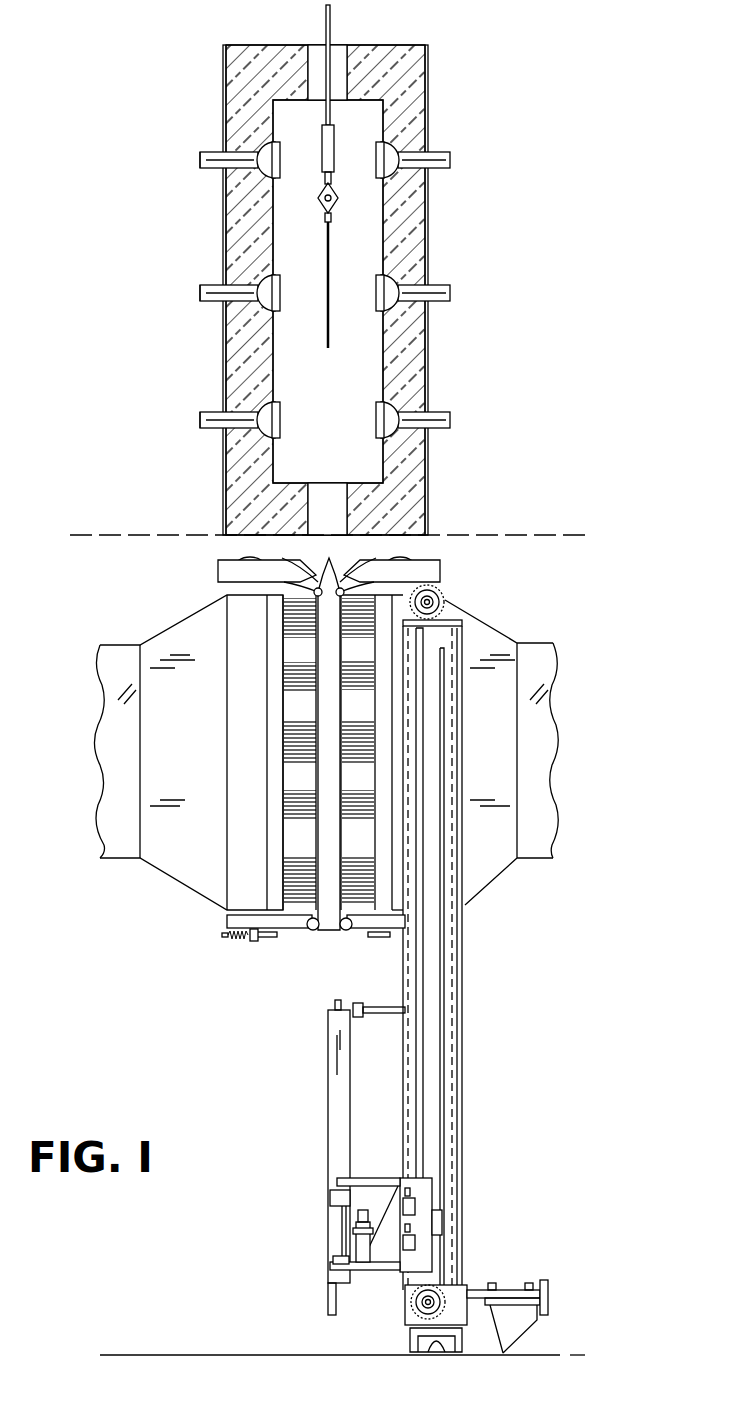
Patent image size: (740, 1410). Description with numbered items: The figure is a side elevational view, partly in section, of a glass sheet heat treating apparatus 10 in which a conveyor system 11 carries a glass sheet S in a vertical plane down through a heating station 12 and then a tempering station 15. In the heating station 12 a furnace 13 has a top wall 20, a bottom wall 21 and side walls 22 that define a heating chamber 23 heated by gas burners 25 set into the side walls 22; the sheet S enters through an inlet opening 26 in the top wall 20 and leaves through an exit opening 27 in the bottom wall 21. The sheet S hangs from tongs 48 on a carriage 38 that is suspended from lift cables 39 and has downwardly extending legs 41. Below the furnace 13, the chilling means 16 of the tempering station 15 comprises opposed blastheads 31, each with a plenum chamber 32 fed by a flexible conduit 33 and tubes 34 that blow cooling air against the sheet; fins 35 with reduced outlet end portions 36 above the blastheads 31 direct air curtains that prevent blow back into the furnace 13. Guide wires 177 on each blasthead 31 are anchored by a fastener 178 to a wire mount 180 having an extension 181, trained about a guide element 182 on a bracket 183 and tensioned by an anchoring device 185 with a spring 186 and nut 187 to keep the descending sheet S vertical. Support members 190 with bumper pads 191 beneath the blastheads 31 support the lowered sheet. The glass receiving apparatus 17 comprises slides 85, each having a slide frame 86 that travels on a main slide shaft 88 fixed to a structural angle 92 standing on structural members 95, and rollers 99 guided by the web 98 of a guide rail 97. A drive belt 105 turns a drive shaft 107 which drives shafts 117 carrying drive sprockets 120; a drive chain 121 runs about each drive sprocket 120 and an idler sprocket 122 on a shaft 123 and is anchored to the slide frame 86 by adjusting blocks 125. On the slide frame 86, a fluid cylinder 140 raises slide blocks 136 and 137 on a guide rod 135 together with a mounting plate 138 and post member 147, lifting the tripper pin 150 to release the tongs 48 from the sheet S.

The glass sheet heat treating apparatus 10 is at (122, 408).
The conveyor system 11 is at (318, 34).
The heating station 12 is at (530, 212).
The furnace 13 is at (438, 203).
The tempering station 15 is at (630, 606).
The chilling means 16 is at (532, 588).
The glass receiving apparatus 17 is at (278, 1088).
The top wall 20 is at (258, 62).
The bottom wall 21 is at (290, 497).
The side walls 22 is at (236, 230).
The heating chamber 23 is at (370, 356).
The gas burners 25 is at (280, 152).
The inlet opening 26 is at (336, 62).
The exit opening 27 is at (334, 492).
The blastheads 31 is at (163, 628).
The plenum chamber 32 is at (192, 756).
The flexible conduit 33 is at (110, 672).
The tubes 34 is at (300, 745).
The fins 35 is at (214, 573).
The reduced outlet end portion 36 is at (284, 560).
The carriage 38 is at (318, 142).
The lift cables 39 is at (332, 14).
The legs 41 is at (322, 172).
The tongs 48 is at (340, 205).
The glass sheet S is at (326, 265).
The slides 85 is at (440, 1175).
The slide frame 86 is at (404, 1180).
The main slide rail or shaft 88 is at (415, 962).
The structural angle 92 is at (463, 644).
The structural members 95 is at (436, 1354).
The guide rail 97 is at (455, 992).
The web 98 is at (444, 1016).
The rollers 99 is at (443, 1222).
The drive belt 105 is at (550, 1302).
The drive shaft 107 is at (514, 1290).
The shafts 117 is at (422, 1306).
The drive sprocket 120 is at (440, 1292).
The drive chain 121 is at (450, 925).
The idler sprocket 122 is at (444, 592).
The shaft 123 is at (434, 602).
The adjusting blocks 125 is at (416, 1205).
The guide rod 135 is at (356, 1245).
The upper slide block 136 is at (330, 1196).
The lower slide block 137 is at (334, 1261).
The mounting plate 138 is at (340, 1222).
The fluid cylinder 140 is at (378, 1268).
The post member 147 is at (328, 1058).
The tong release or tripper pin 150 is at (338, 1000).
The guide wires 177 is at (330, 720).
The fastener 178 is at (272, 585).
The wire mount 180 is at (290, 620).
The extension 181 is at (329, 553).
The guide element 182 is at (342, 932).
The bracket 183 is at (290, 930).
The anchoring device 185 is at (254, 942).
The spring 186 is at (240, 940).
The nut 187 is at (232, 940).
The support members 190 is at (388, 1015).
The bumper pads 191 is at (360, 1018).